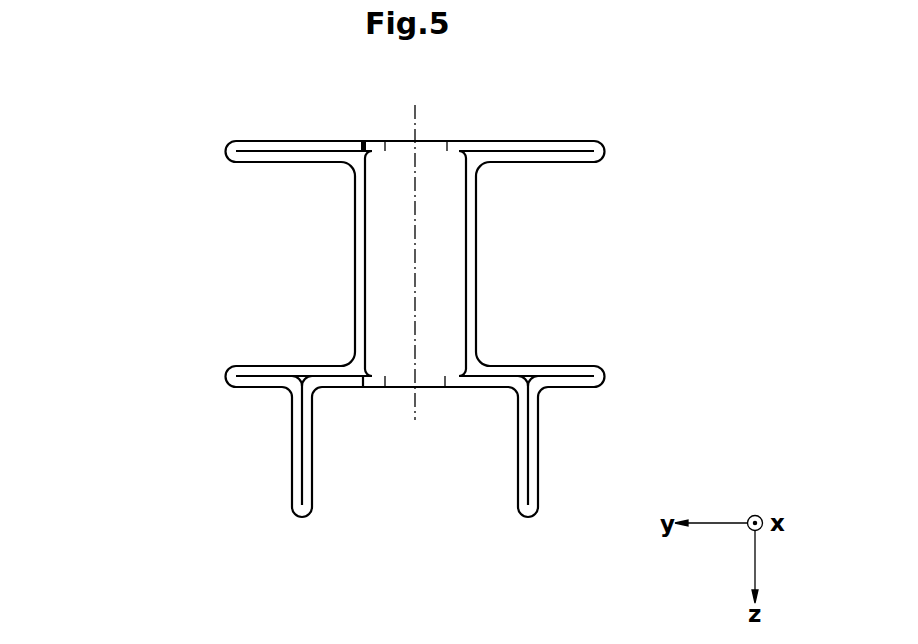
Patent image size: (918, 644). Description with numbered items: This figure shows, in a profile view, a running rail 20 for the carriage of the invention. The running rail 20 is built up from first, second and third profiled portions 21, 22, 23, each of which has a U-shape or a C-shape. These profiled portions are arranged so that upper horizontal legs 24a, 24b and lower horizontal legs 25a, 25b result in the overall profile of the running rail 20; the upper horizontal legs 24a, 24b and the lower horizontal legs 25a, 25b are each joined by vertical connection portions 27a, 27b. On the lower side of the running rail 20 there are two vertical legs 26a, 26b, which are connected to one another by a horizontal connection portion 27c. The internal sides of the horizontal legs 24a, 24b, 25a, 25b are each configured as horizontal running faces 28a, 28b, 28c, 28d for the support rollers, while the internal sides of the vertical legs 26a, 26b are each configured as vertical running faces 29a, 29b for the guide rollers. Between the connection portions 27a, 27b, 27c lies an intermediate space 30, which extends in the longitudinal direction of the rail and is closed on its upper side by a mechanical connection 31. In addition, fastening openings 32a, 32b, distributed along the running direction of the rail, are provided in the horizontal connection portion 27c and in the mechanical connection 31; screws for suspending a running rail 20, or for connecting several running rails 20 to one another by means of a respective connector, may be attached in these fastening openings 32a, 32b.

The running rail 20 is at (188, 113).
The first profiled portion 21 is at (600, 253).
The second profiled portion 22 is at (220, 253).
The third profiled portion 23 is at (418, 492).
The upper horizontal leg 24a is at (562, 147).
The upper horizontal leg 24b is at (285, 145).
The lower horizontal leg 25a is at (575, 378).
The lower horizontal leg 25b is at (252, 376).
The vertical leg 26a is at (527, 453).
The vertical leg 26b is at (302, 472).
The vertical connection portion 27a is at (472, 298).
The vertical connection portion 27b is at (360, 299).
The horizontal connection portion 27c is at (477, 383).
The horizontal running face 28a is at (553, 162).
The horizontal running face 28b is at (553, 366).
The horizontal running face 28c is at (278, 162).
The horizontal running face 28d is at (280, 366).
The vertical running face 29a is at (517, 444).
The vertical running face 29b is at (312, 451).
The intermediate space 30 is at (446, 182).
The mechanical connection 31 is at (477, 147).
The fastening opening 32a is at (398, 147).
The fastening opening 32b is at (407, 383).